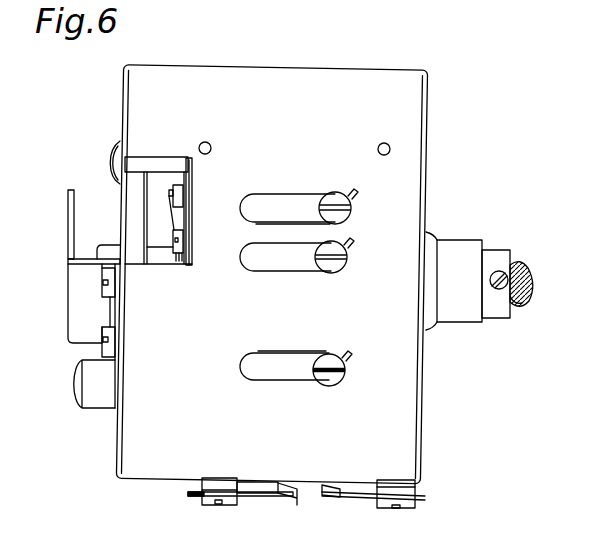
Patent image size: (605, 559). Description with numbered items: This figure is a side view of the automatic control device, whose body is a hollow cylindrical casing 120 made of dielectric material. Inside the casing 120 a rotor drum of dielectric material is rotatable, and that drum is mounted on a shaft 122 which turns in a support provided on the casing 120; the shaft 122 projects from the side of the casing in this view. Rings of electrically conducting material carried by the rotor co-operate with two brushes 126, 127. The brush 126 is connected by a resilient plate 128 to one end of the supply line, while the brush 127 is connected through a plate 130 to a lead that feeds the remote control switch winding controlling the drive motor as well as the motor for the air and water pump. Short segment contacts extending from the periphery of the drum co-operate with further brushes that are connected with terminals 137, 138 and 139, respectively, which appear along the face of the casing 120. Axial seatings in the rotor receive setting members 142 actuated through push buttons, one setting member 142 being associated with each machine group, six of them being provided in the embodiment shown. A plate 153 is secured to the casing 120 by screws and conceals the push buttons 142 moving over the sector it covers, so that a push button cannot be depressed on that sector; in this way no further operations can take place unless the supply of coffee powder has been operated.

The hollow cylindrical casing 120 is at (386, 80).
The shaft 122 is at (517, 264).
The brush 126 is at (342, 497).
The brush 127 is at (298, 495).
The resilient plate 128 is at (375, 503).
The plate 130 is at (250, 497).
The terminal 137 is at (341, 205).
The terminal 138 is at (336, 267).
The terminal 139 is at (335, 381).
The setting member 142 is at (112, 163).
The plate 153 is at (70, 226).